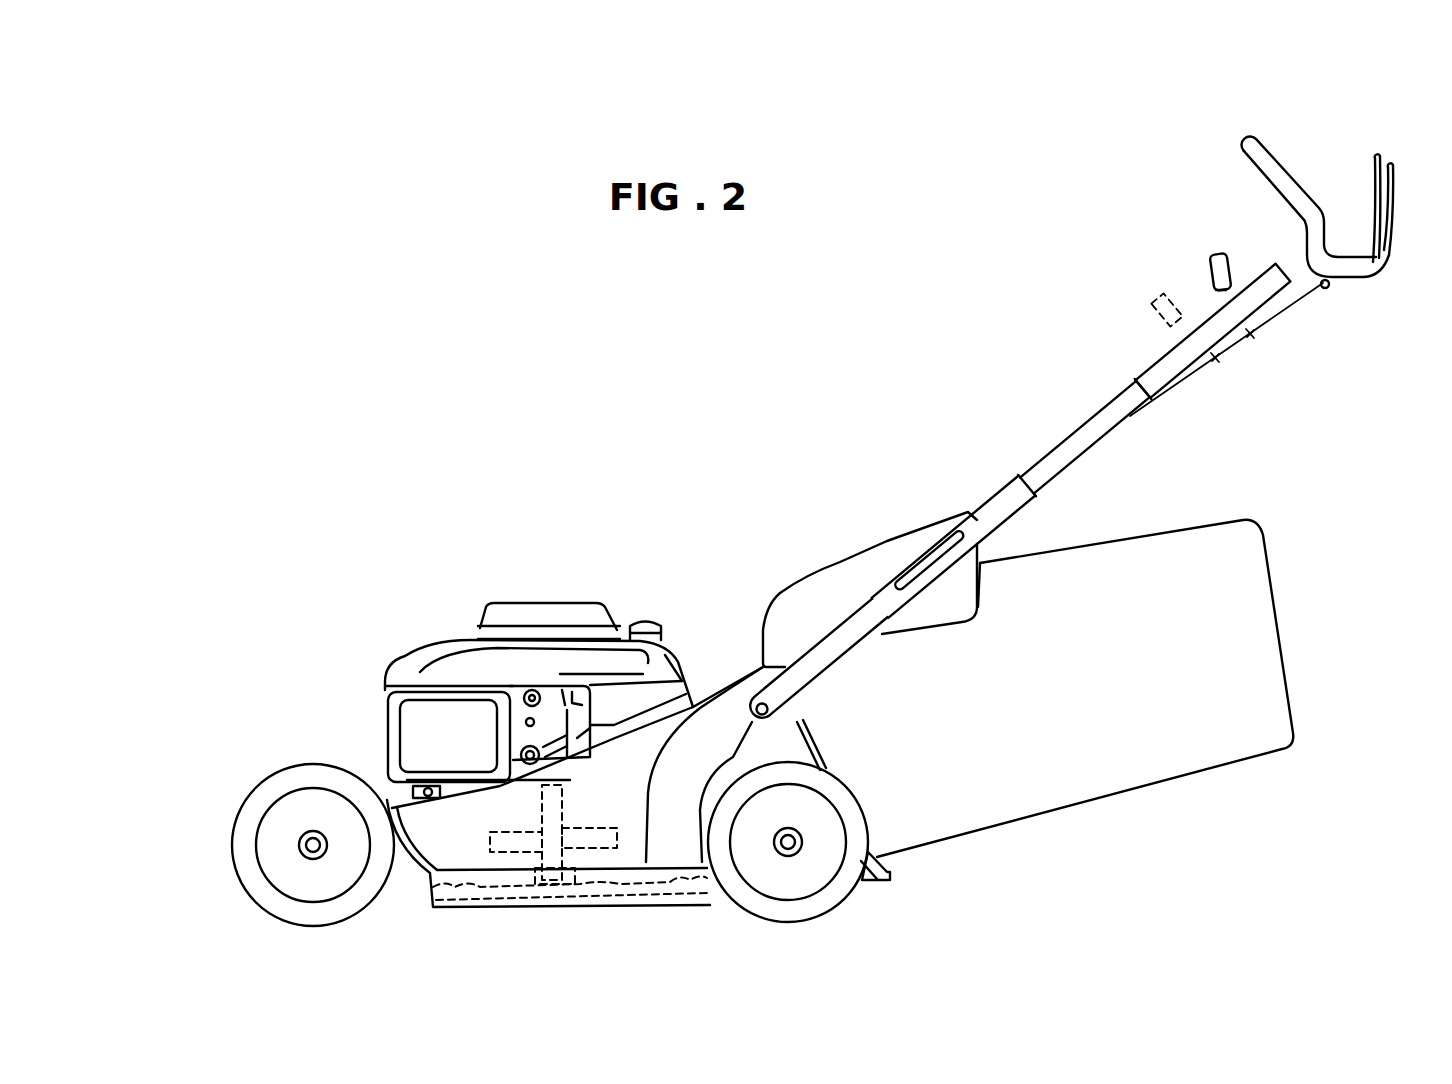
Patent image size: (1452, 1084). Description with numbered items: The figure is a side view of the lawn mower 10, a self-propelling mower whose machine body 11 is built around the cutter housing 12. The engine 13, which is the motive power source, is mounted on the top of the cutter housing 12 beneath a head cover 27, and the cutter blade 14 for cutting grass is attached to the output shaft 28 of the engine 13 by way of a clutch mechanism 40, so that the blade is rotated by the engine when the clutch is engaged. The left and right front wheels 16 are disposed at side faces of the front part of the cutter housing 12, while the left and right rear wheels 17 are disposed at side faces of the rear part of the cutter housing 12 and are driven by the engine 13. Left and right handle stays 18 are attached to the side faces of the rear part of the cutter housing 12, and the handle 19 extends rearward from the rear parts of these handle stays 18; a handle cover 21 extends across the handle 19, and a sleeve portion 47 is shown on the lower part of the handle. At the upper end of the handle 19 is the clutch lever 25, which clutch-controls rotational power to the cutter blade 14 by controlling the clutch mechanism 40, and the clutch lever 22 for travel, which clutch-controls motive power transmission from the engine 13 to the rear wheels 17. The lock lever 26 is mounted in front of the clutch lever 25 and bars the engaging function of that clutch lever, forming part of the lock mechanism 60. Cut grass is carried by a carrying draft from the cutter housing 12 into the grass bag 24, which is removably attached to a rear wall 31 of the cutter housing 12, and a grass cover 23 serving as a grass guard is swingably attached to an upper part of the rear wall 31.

The lawn mower 10 is at (335, 240).
The machine body 11 is at (378, 502).
The cutter housing 12 is at (483, 788).
The engine 13 is at (552, 706).
The cutter blade 14 is at (473, 867).
The front wheels 16 is at (265, 770).
The rear wheels 17 is at (852, 791).
The handle stays 18 is at (683, 697).
The handle 19 is at (1067, 433).
The handle cover 21 is at (1140, 372).
The clutch lever for travel 22 is at (1392, 155).
The grass cover 23 is at (893, 548).
The grass bag 24 is at (1220, 520).
The clutch lever 25 is at (1373, 168).
The lock lever 26 is at (1217, 257).
The head cover 27 is at (453, 632).
The output shaft 28 is at (520, 770).
The rear wall 31 is at (818, 738).
The clutch mechanism 40 is at (598, 820).
The handle lock sleeve 47 is at (1027, 490).
The lock mechanism 60 is at (1180, 285).